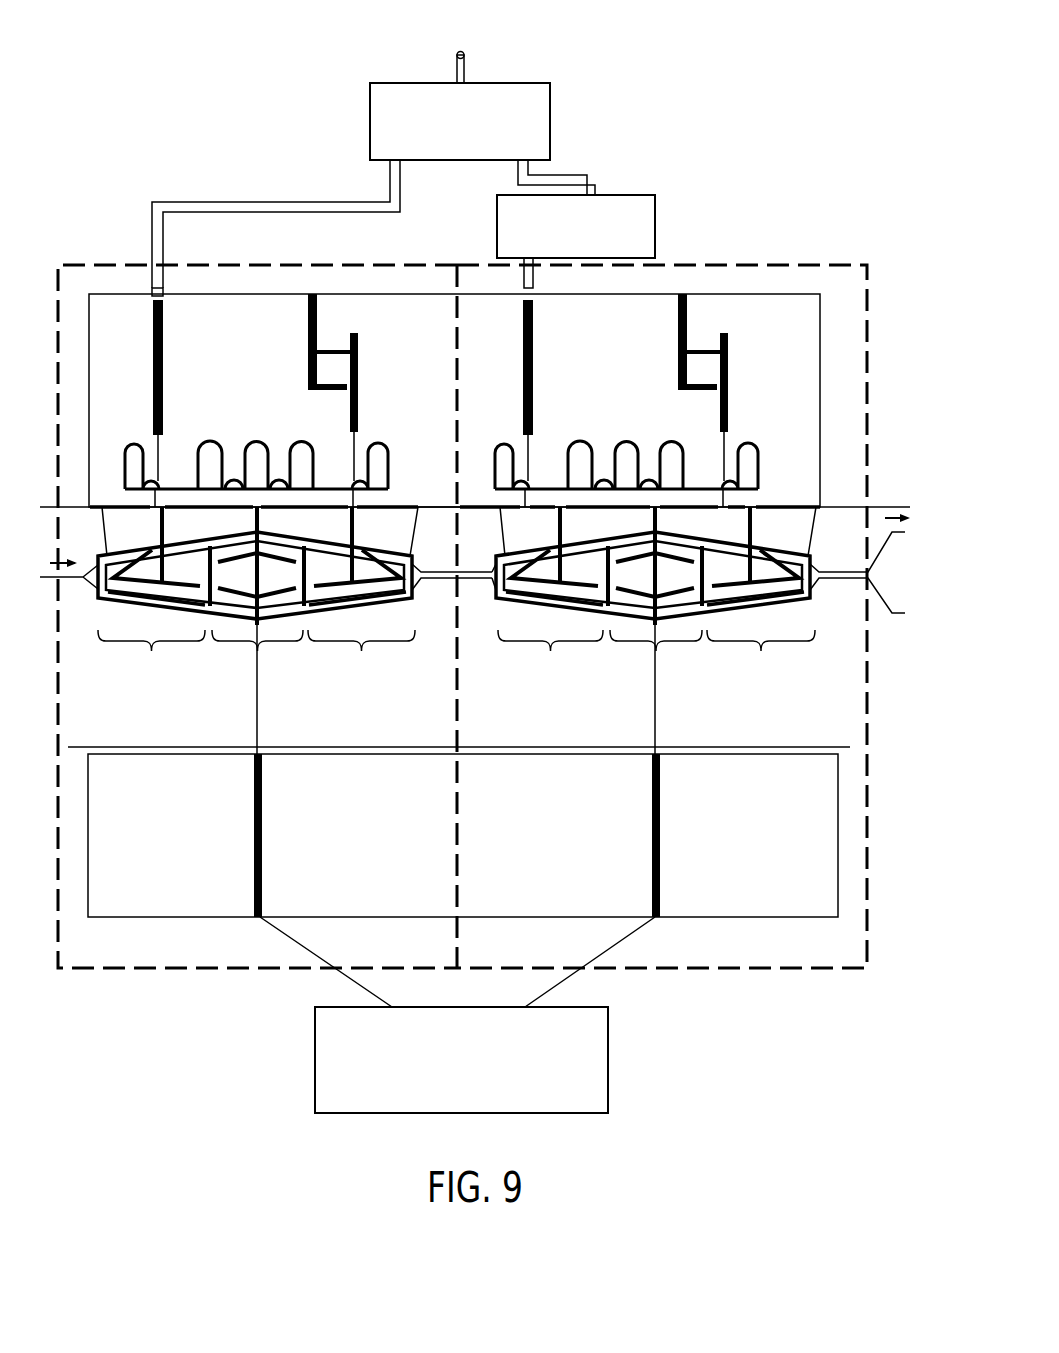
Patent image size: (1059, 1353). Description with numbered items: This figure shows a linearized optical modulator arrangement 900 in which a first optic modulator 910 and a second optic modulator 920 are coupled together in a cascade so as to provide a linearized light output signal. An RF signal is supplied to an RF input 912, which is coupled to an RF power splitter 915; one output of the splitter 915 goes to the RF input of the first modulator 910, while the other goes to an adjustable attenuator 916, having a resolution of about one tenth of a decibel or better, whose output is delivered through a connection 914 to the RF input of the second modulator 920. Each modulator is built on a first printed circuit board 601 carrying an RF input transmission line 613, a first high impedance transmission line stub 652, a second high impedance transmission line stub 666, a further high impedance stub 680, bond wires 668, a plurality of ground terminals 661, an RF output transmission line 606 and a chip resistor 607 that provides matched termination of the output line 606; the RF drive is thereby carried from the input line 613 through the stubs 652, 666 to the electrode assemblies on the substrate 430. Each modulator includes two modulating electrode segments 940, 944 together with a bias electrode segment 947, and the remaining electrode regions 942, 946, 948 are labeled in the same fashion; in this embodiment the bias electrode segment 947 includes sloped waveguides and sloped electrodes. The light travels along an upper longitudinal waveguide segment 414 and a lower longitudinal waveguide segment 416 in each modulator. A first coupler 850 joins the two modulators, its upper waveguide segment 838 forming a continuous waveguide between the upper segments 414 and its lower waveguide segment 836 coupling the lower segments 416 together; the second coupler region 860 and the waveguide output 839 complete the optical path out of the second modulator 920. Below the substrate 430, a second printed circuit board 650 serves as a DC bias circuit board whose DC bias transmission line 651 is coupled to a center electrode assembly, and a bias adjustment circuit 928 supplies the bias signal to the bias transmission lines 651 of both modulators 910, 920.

The electrophoresis system 900 is at (730, 40).
The RF input 912 is at (468, 60).
The RF power splitter 915 is at (552, 118).
The adjustable attenuator 916 is at (634, 195).
The connector 914 is at (522, 277).
The first optic modulator 910 is at (105, 265).
The second optic modulator 920 is at (814, 265).
The first printed circuit board 601 is at (285, 310).
The RF input transmission line 613 is at (164, 352).
The first high impedance transmission line stub 652 is at (147, 455).
The chip resistor 607 is at (335, 366).
The RF output transmission line 606 is at (358, 406).
The high impedance transmission line stub 680 is at (465, 438).
The second high impedance transmission line stub 666 is at (197, 462).
The bond wire 668 is at (298, 443).
The ground terminals 661 is at (102, 503).
The upper longitudinal waveguide segment 414 is at (137, 562).
The lower longitudinal waveguide segment 416 is at (147, 593).
The lower waveguide segment 836 is at (430, 580).
The upper waveguide segment 838 is at (437, 571).
The outlet channel 839 is at (837, 570).
The modulating electrode segment 940 is at (151, 660).
The second region 942 is at (257, 660).
The modulating electrode segment 944 is at (361, 660).
The fourth region 946 is at (550, 659).
The bias electrode segment 947 is at (656, 659).
The sixth region 948 is at (761, 659).
The first coupler 850 is at (243, 630).
The second separation device 860 is at (674, 630).
The substrate 430 is at (793, 682).
The second printed circuit board 650 is at (182, 893).
The DC bias transmission line 651 is at (263, 822).
The bias adjustment circuit 928 is at (608, 1058).